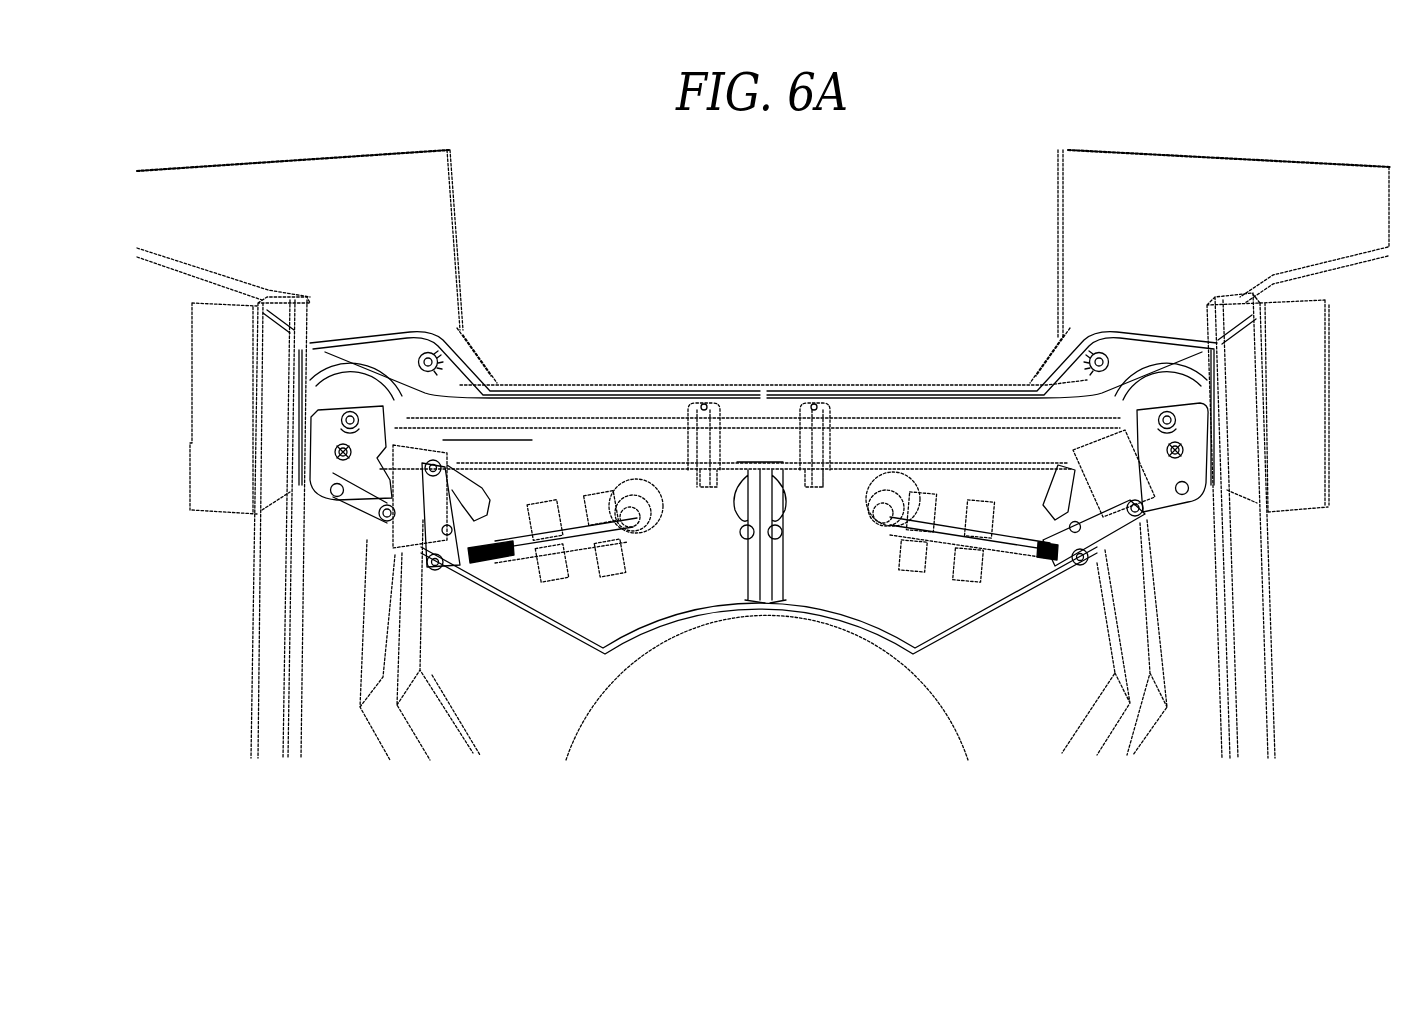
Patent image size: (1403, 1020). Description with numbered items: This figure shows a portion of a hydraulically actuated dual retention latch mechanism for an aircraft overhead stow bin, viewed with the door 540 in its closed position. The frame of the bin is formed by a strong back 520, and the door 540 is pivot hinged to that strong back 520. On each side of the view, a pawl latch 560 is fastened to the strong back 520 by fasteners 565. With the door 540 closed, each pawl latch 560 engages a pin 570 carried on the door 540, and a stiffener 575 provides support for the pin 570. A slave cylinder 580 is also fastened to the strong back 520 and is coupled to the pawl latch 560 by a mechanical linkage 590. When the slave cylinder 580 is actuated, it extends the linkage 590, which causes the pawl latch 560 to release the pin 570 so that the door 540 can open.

The strong back 520 is at (445, 715).
The door 540 is at (258, 657).
The pawl latch 560 is at (323, 470).
The fasteners 565 is at (440, 360).
The pin 570 is at (350, 417).
The stiffener 575 is at (215, 514).
The slave cylinder 580 is at (622, 567).
The mechanical linkage 590 is at (478, 510).